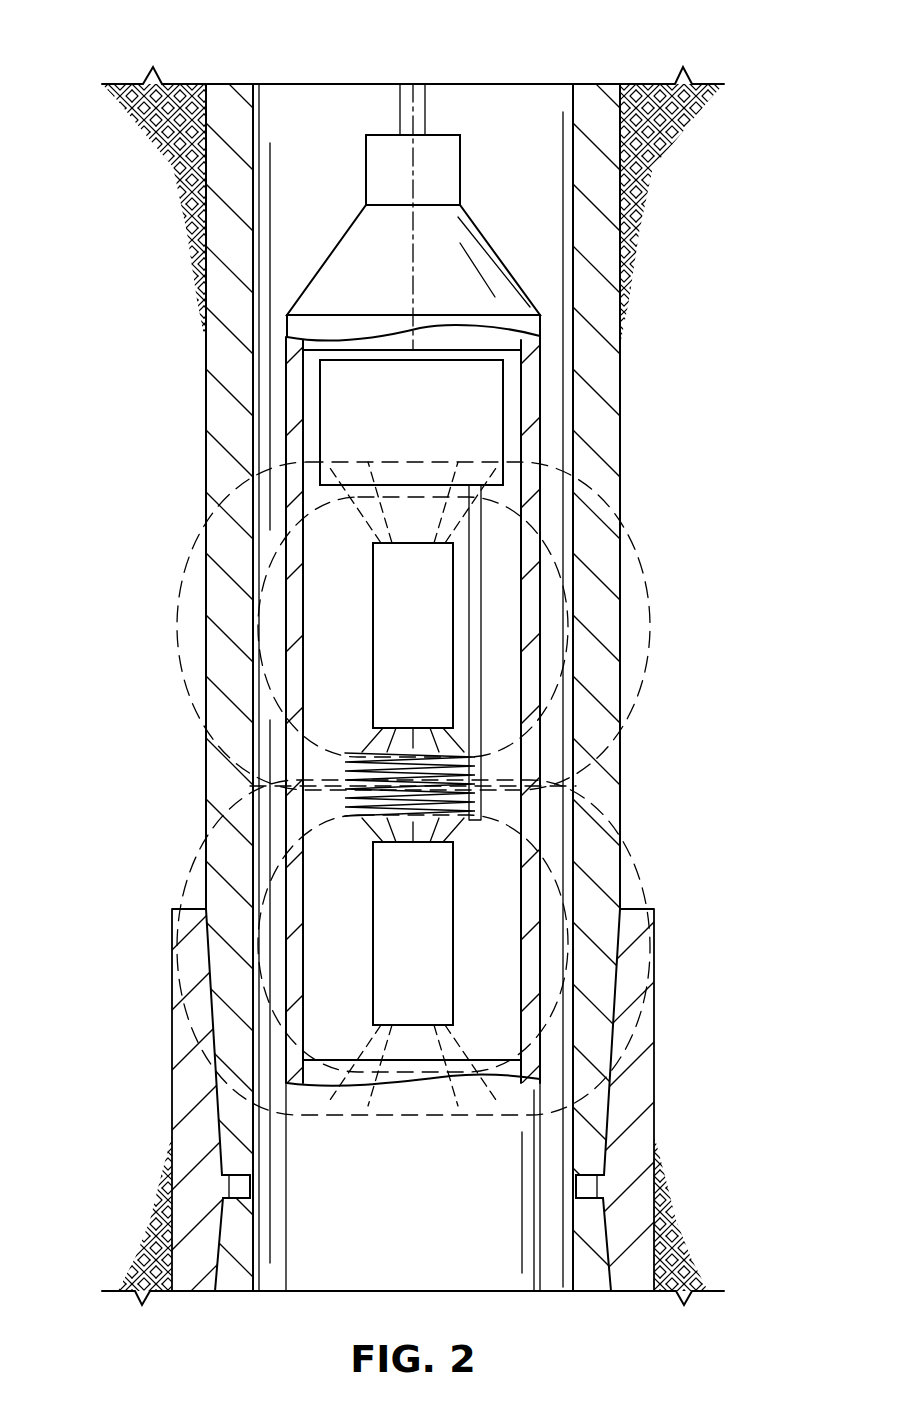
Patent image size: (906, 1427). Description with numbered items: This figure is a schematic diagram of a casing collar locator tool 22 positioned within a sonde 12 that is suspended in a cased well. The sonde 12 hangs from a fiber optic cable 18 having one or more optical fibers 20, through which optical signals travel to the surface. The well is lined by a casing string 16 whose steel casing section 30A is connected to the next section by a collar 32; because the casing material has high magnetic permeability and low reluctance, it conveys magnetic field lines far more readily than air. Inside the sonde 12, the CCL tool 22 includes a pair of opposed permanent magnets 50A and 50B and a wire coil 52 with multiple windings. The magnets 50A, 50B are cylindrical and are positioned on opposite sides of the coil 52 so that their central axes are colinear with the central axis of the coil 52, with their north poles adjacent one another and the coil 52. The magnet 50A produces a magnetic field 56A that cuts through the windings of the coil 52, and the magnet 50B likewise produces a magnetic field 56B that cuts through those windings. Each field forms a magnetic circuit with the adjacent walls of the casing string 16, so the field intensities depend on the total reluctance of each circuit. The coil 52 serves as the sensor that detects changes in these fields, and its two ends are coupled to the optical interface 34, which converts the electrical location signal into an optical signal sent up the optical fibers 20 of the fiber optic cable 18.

The casing string 16 is at (546, 50).
The fiber optic cable 18 is at (426, 113).
The sonde 12 is at (328, 258).
The optical fiber 20 is at (412, 272).
The optical interface 34 is at (398, 467).
The casing section 30A is at (632, 477).
The collar 32 is at (180, 1110).
The magnetic field 56A is at (648, 617).
The magnetic field 56B is at (636, 871).
The permanent magnet 50A is at (392, 651).
The permanent magnet 50B is at (392, 951).
The wire coil 52 is at (372, 752).
The casing collar locator tool 22 is at (414, 1104).